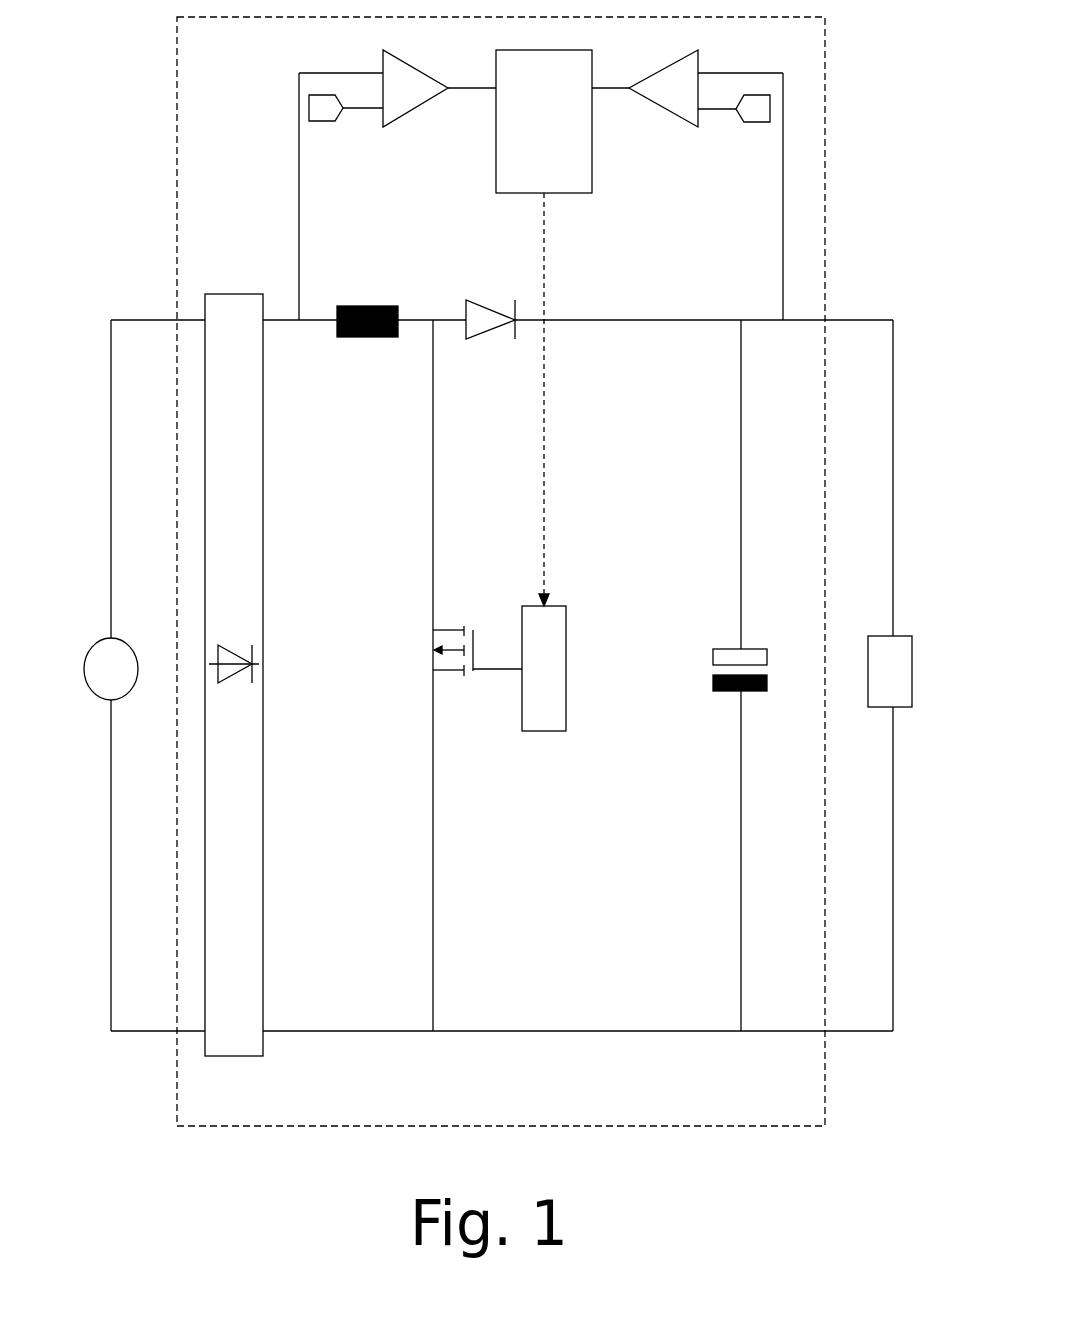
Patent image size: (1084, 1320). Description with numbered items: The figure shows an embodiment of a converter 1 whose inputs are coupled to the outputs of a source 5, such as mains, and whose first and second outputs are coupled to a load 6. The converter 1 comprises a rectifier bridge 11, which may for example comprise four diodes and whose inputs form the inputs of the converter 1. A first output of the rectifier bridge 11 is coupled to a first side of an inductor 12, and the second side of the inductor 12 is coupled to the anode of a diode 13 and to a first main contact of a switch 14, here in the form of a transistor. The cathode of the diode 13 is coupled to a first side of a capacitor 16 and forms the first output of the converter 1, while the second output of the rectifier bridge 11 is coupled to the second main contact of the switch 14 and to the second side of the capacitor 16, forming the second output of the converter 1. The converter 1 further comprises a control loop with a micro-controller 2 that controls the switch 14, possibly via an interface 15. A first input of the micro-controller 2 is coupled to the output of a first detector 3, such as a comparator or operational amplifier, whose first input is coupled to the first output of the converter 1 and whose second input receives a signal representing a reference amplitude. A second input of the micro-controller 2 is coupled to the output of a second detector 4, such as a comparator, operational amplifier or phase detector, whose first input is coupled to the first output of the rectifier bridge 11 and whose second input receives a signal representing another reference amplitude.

The converter 1 is at (798, 1126).
The micro-controller 2 is at (580, 193).
The first detector 3 is at (699, 118).
The second detector 4 is at (396, 118).
The source 5 is at (122, 699).
The load 6 is at (877, 707).
The rectifier bridge 11 is at (233, 1056).
The inductor 12 is at (368, 353).
The diode 13 is at (491, 349).
The switch 14 is at (445, 664).
The interface 15 is at (547, 731).
The capacitor 16 is at (718, 692).